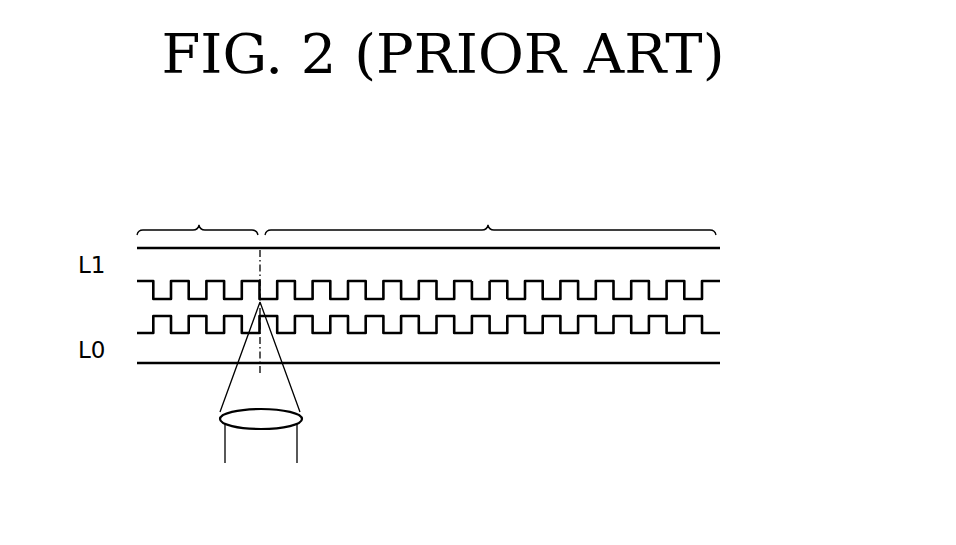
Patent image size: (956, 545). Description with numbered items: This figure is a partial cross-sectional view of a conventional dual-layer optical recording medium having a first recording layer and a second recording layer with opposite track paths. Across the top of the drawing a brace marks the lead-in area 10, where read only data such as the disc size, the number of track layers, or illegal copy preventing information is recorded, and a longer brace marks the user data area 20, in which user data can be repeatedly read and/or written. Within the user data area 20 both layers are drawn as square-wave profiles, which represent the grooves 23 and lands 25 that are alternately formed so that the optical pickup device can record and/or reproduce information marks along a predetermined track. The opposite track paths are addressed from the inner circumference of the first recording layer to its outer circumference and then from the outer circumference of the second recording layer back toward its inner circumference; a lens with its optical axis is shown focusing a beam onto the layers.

The lead-in area 10 is at (197, 216).
The user data area 20 is at (490, 216).
The groove 23 is at (480, 299).
The land 25 is at (497, 281).